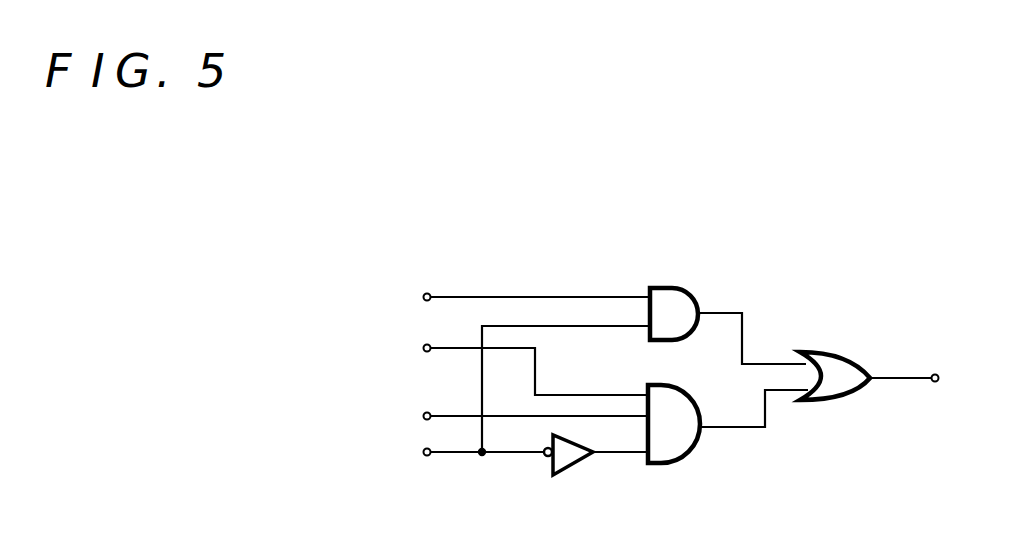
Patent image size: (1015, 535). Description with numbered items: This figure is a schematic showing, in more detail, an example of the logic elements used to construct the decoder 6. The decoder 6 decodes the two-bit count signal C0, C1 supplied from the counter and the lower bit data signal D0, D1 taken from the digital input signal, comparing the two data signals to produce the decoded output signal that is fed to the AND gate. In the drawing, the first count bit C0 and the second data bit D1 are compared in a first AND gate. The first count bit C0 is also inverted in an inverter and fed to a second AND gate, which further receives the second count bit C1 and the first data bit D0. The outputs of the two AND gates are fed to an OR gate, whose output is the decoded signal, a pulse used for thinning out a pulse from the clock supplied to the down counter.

The decoder 6 is at (657, 266).
The second data bit D1 is at (513, 297).
The first data bit D0 is at (512, 364).
The second count bit C1 is at (512, 416).
The first count bit C0 is at (513, 396).